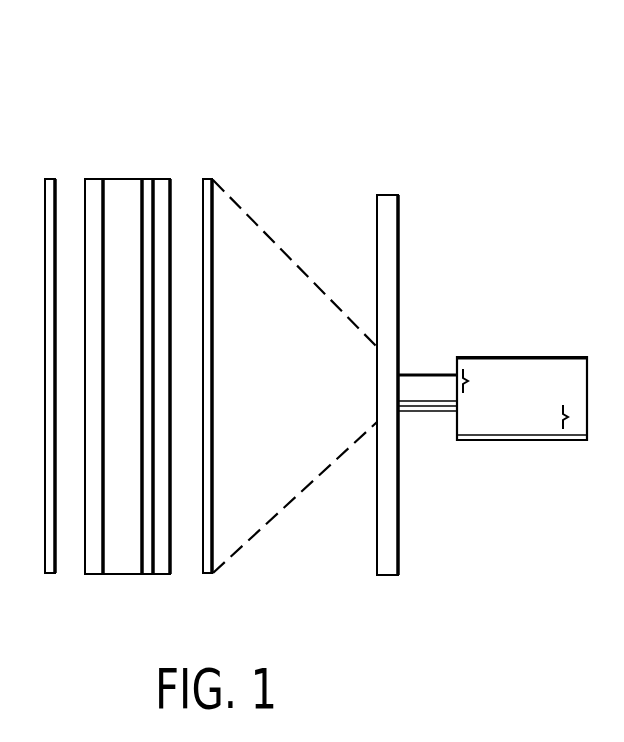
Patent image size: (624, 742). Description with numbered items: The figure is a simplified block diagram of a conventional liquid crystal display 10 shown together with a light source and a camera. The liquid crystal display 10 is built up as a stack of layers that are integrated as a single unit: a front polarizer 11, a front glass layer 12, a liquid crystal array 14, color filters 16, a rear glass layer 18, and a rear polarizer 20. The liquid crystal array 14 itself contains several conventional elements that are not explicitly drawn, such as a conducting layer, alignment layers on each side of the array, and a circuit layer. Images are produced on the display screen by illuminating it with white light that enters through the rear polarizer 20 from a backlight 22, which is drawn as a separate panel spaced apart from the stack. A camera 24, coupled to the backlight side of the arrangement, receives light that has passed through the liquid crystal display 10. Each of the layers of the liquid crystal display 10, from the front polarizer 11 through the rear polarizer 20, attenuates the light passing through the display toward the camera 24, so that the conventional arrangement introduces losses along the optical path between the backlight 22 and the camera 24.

The liquid crystal display 10 is at (17, 95).
The front polarizer 11 is at (50, 178).
The front glass layer 12 is at (97, 178).
The liquid crystal array 14 is at (113, 178).
The color filters 16 is at (150, 178).
The rear glass layer 18 is at (172, 178).
The rear polarizer 20 is at (208, 178).
The backlight 22 is at (400, 575).
The camera 24 is at (488, 352).